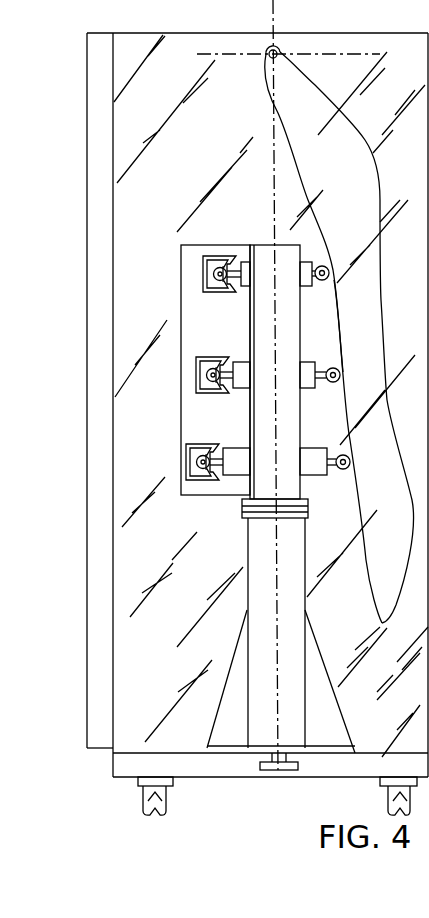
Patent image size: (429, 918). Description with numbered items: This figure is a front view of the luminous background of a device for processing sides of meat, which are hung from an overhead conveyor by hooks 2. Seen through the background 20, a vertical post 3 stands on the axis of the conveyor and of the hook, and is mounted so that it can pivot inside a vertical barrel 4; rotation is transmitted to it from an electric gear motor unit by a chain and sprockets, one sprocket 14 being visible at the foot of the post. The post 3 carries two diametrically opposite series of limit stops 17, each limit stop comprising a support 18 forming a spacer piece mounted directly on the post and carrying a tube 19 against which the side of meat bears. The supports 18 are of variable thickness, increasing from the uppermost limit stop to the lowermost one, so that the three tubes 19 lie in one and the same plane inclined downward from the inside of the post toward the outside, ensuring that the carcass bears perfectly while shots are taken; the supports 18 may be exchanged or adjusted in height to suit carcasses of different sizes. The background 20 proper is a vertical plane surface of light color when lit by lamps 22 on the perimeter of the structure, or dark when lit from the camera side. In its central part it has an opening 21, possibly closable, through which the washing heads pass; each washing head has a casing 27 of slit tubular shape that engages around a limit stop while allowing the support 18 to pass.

The hook 2 is at (279, 58).
The vertical post 3 is at (258, 323).
The vertical barrel 4 is at (248, 537).
The sprocket 14 is at (280, 770).
The limit stop 17 is at (334, 290).
The support 18 is at (316, 255).
The tube 19 is at (326, 270).
The background 20 is at (158, 107).
The opening 21 is at (185, 251).
The lamp 22 is at (92, 129).
The casing 27 is at (206, 268).